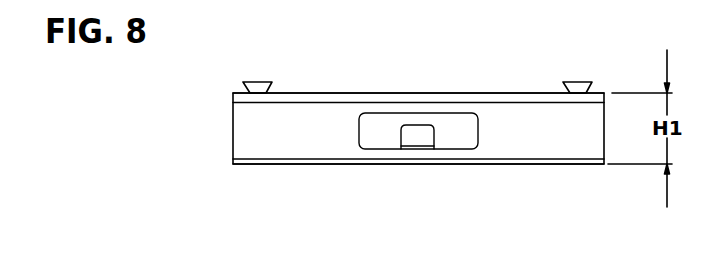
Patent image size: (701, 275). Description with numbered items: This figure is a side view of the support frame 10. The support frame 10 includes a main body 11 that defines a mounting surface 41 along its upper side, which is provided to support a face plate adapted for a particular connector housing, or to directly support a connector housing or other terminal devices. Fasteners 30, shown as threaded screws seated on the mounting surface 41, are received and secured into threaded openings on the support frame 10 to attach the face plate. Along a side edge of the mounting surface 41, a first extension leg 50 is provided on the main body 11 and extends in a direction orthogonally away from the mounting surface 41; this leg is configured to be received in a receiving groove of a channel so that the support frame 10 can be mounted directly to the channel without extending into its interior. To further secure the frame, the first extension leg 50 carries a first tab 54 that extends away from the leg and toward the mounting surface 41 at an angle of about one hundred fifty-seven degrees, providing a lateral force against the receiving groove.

The support frame 10 is at (238, 119).
The main body 11 is at (604, 164).
The fasteners 30 is at (258, 82).
The mounting surface 41 is at (539, 93).
The first extension leg 50 is at (290, 145).
The first tab 54 is at (420, 137).